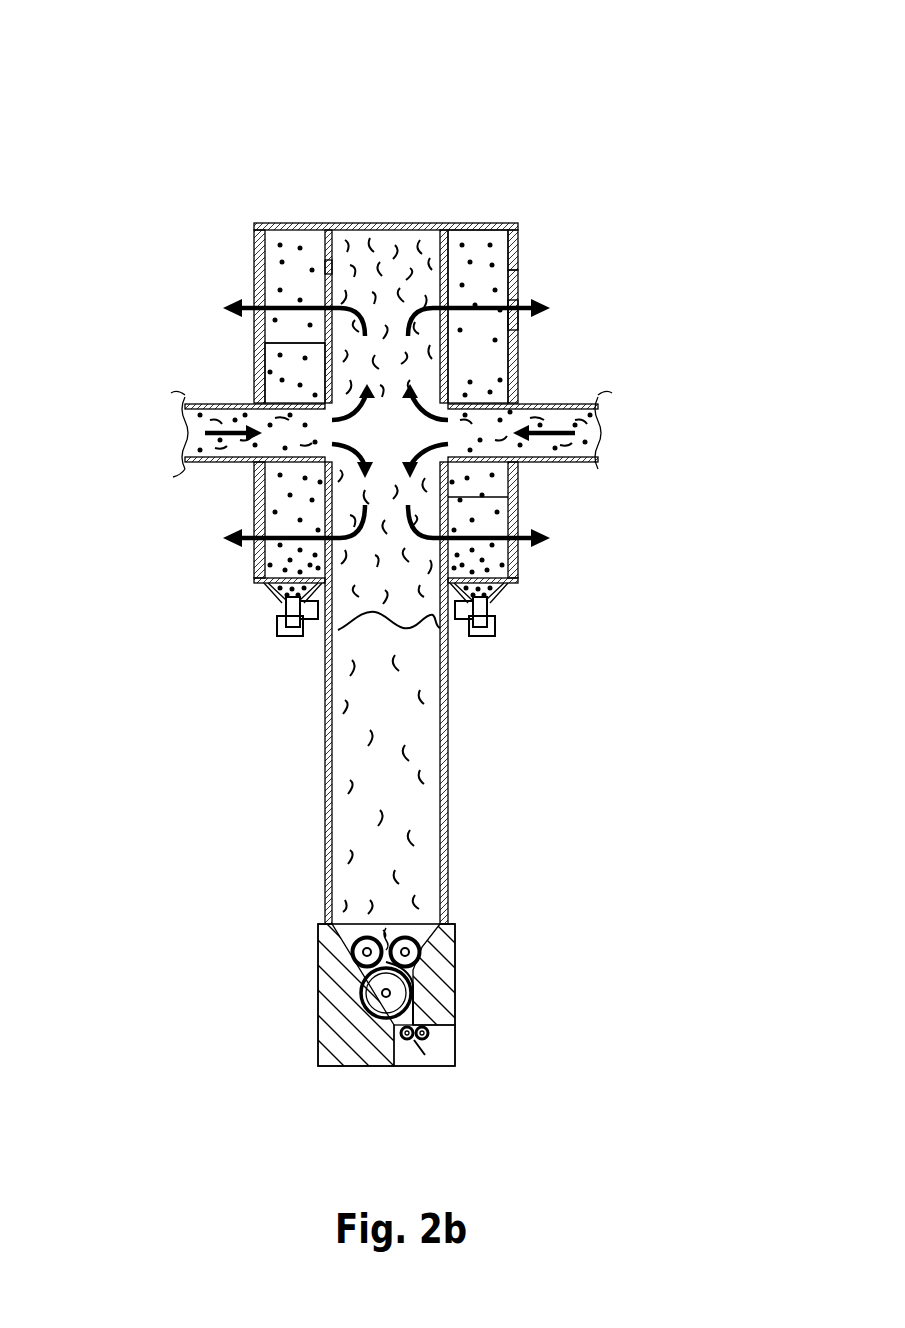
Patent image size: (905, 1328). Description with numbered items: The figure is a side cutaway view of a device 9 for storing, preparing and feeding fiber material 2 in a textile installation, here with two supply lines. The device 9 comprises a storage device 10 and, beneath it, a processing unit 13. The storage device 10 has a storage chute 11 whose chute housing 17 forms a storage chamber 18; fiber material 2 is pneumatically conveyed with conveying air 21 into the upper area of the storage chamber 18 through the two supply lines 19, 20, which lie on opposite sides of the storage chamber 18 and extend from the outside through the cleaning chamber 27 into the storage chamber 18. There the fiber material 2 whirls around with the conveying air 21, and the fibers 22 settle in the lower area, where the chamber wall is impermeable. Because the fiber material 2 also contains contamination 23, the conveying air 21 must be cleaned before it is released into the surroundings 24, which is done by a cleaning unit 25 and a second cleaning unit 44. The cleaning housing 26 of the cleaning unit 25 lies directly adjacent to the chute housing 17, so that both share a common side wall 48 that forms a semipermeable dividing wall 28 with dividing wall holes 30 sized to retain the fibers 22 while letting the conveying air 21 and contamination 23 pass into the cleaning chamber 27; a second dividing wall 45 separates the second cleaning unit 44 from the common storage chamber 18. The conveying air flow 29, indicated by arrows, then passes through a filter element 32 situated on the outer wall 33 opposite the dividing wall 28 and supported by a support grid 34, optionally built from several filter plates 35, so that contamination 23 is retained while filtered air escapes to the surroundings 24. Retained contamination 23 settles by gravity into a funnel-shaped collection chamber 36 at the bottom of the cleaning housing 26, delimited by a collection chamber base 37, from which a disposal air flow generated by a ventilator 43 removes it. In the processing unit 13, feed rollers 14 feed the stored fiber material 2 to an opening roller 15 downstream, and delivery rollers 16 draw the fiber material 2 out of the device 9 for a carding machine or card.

The device 9 is at (120, 80).
The fiber material 2 is at (557, 420).
The storage device 10 is at (312, 758).
The storage chute 11 is at (325, 695).
The processing unit 13 is at (308, 992).
The feed rollers 14 is at (415, 952).
The opening roller 15 is at (397, 997).
The delivery rollers 16 is at (388, 1067).
The chute housing 17 is at (385, 223).
The storage chamber 18 is at (410, 445).
The supply line 19 is at (593, 467).
The supply line 20 is at (210, 463).
The conveying air 21 is at (585, 407).
The fibers 22 is at (352, 245).
The contamination 23 is at (508, 560).
The surroundings 24 is at (625, 350).
The cleaning unit 25 is at (530, 588).
The cleaning housing 26 is at (513, 227).
The cleaning chamber 27 is at (460, 369).
The dividing wall 28 is at (452, 248).
The conveying air flow 29 is at (503, 317).
The dividing wall holes 30 is at (448, 496).
The filter element 32 is at (513, 255).
The outer wall 33 is at (515, 285).
The support grid 34 is at (520, 522).
The filter plates 35 is at (262, 260).
The collection chamber 36 is at (500, 597).
The collection chamber base 37 is at (495, 637).
The ventilator 43 is at (478, 640).
The second cleaning unit 44 is at (248, 370).
The second dividing wall 45 is at (322, 267).
The common side wall 48 is at (262, 343).